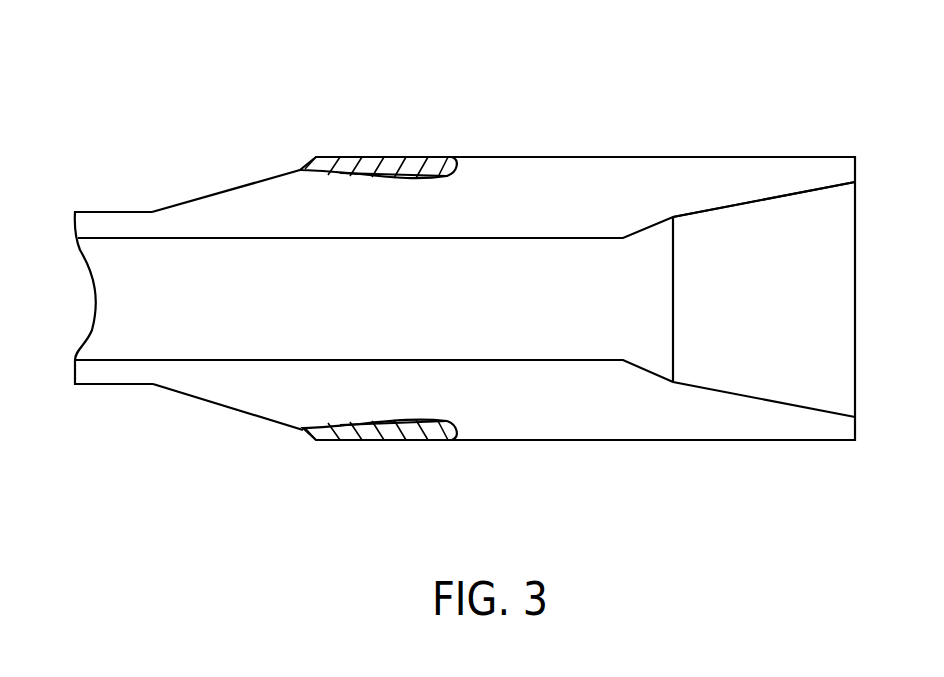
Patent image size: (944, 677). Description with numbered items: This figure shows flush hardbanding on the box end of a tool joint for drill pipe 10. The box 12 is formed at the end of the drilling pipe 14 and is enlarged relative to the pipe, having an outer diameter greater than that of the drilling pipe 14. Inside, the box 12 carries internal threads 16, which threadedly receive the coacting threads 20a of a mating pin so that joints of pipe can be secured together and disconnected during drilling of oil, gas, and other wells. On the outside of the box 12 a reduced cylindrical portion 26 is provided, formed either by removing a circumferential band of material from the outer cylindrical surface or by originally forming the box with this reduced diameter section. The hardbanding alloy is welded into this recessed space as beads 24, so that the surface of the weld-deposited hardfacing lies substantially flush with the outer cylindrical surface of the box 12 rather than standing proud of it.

The tool joint for drill pipe 10 is at (465, 269).
The box 12 is at (652, 417).
The drilling pipe 14 is at (120, 385).
The internal threads 16 is at (727, 207).
The coacting threads 20a is at (520, 157).
The beads 24 is at (378, 157).
The reduced cylindrical portion 26 is at (390, 178).